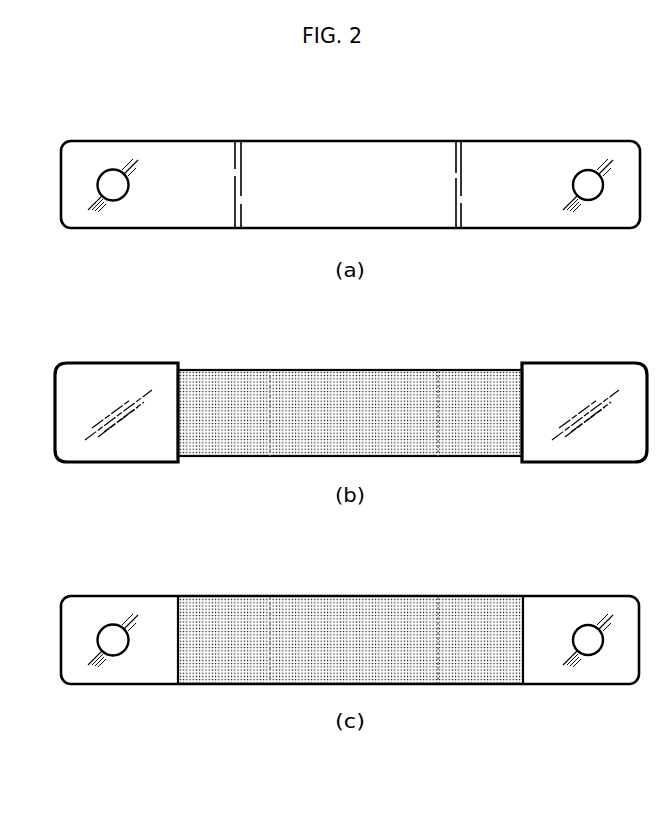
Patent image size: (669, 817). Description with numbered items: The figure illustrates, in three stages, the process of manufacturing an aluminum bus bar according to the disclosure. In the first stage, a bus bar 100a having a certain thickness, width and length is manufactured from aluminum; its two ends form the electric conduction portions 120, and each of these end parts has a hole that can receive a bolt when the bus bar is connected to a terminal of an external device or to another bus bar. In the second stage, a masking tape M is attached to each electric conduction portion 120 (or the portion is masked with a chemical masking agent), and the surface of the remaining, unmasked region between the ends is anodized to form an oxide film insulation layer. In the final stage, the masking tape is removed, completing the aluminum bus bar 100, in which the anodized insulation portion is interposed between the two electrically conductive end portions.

The bus bar 100a is at (61, 138).
The masking tape M is at (128, 372).
The aluminum bus bar 100 is at (62, 592).
The electric conduction portion 120 is at (126, 607).